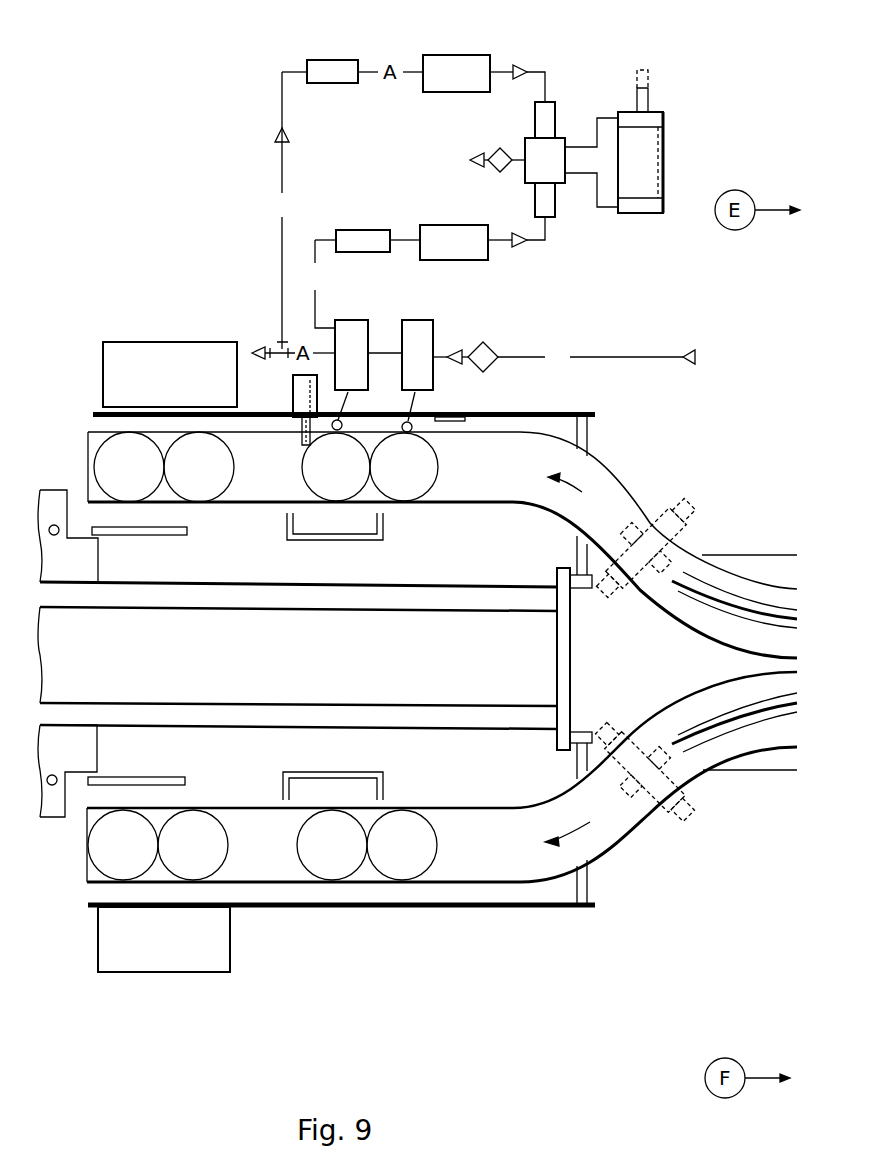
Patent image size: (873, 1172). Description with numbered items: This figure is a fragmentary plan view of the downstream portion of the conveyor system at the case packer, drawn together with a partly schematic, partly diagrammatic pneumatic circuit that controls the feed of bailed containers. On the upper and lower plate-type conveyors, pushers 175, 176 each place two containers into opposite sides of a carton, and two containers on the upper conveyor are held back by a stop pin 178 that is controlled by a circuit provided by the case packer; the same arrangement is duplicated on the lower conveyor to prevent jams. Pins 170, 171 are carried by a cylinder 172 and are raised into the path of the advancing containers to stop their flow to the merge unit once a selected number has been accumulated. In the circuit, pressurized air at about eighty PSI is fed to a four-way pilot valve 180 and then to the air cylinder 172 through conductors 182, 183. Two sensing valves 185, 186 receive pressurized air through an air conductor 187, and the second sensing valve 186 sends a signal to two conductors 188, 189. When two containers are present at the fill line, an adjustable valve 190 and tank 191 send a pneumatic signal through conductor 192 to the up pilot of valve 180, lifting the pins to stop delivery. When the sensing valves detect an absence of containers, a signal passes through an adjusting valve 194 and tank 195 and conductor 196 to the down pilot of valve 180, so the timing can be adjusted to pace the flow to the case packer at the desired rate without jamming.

The pin 170 is at (645, 100).
The pin 171 is at (648, 98).
The cylinder 172 is at (653, 153).
The pusher 175 is at (143, 345).
The pusher 176 is at (143, 962).
The stop pin 178 is at (300, 433).
The four-way pilot valve 180 is at (528, 172).
The conductor 182 is at (582, 178).
The conductor 183 is at (582, 146).
The sensing valve 185 is at (433, 325).
The second sensing valve 186 is at (347, 323).
The air conductor 187 is at (520, 357).
The conductor 188 is at (318, 257).
The conductor 189 is at (284, 161).
The adjustable valve 190 is at (336, 77).
The tank 191 is at (452, 85).
The conductor 192 is at (548, 82).
The adjusting valve 194 is at (357, 232).
The tank 195 is at (440, 252).
The conductor 196 is at (546, 238).